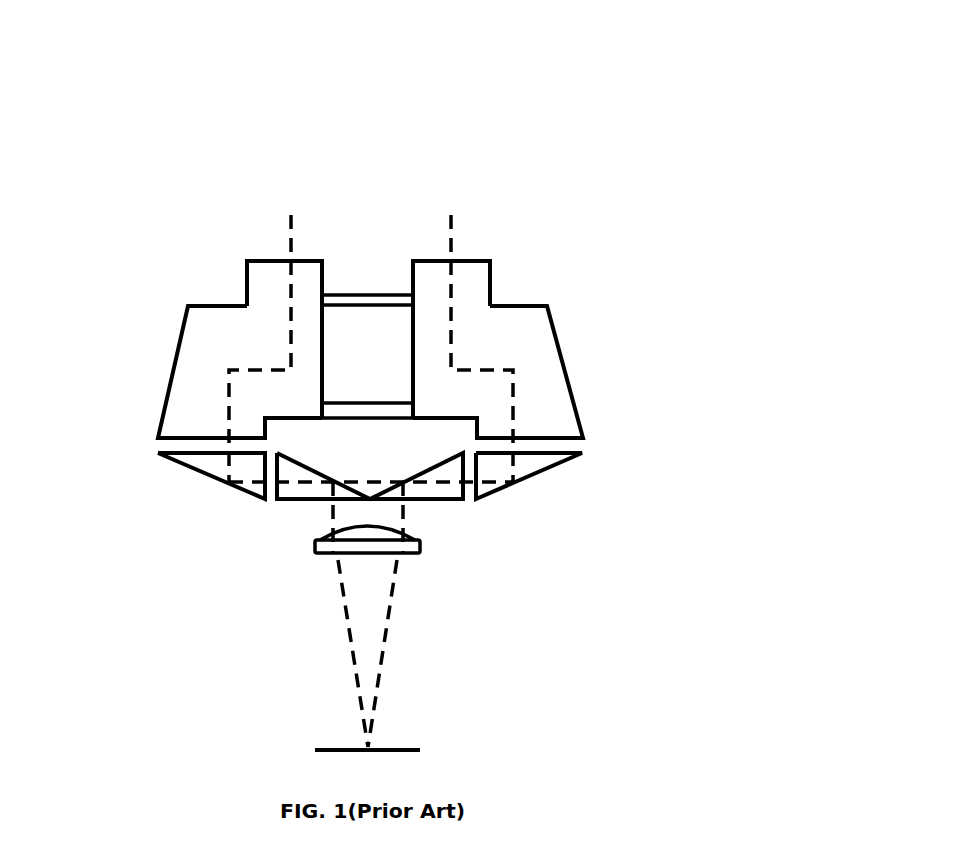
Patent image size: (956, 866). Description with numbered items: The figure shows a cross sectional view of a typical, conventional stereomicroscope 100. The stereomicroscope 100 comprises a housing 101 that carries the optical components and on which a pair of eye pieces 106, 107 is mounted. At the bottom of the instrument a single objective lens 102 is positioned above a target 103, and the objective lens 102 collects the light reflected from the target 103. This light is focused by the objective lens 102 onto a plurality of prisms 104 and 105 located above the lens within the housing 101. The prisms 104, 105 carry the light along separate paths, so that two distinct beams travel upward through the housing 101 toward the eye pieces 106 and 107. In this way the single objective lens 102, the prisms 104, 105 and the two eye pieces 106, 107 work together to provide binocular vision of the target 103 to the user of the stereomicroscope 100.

The stereomicroscope 100 is at (513, 115).
The housing 101 is at (176, 355).
The objective lens 102 is at (420, 548).
The target 103 is at (420, 750).
The prism 104 is at (293, 492).
The prism 105 is at (547, 467).
The eye piece 106 is at (462, 261).
The eye piece 107 is at (270, 261).